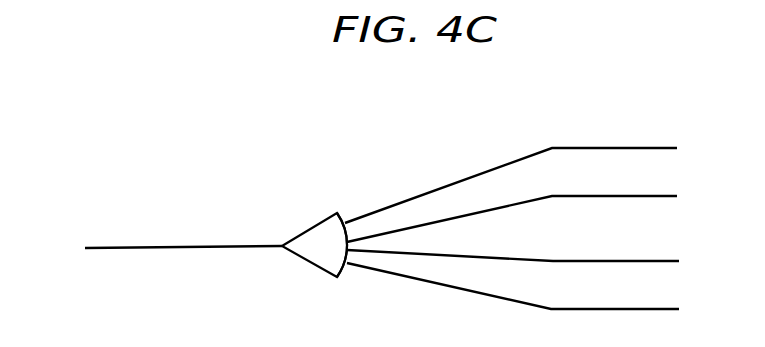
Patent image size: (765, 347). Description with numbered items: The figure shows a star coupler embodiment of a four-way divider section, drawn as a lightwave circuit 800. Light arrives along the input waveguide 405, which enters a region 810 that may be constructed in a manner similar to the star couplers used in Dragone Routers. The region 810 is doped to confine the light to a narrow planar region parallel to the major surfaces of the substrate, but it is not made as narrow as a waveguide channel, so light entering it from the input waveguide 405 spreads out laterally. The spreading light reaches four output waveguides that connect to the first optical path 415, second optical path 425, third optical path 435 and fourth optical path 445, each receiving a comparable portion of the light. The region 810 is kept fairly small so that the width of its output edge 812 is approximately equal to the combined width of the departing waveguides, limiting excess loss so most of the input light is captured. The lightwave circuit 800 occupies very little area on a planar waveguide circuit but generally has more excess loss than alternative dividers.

The input waveguide 405 is at (117, 248).
The lightwave circuit 800 is at (282, 112).
The region 810 is at (301, 273).
The output edge 812 is at (340, 213).
The first optical path 415 is at (657, 148).
The second optical path 425 is at (657, 196).
The third optical path 435 is at (657, 261).
The fourth optical path 445 is at (657, 309).